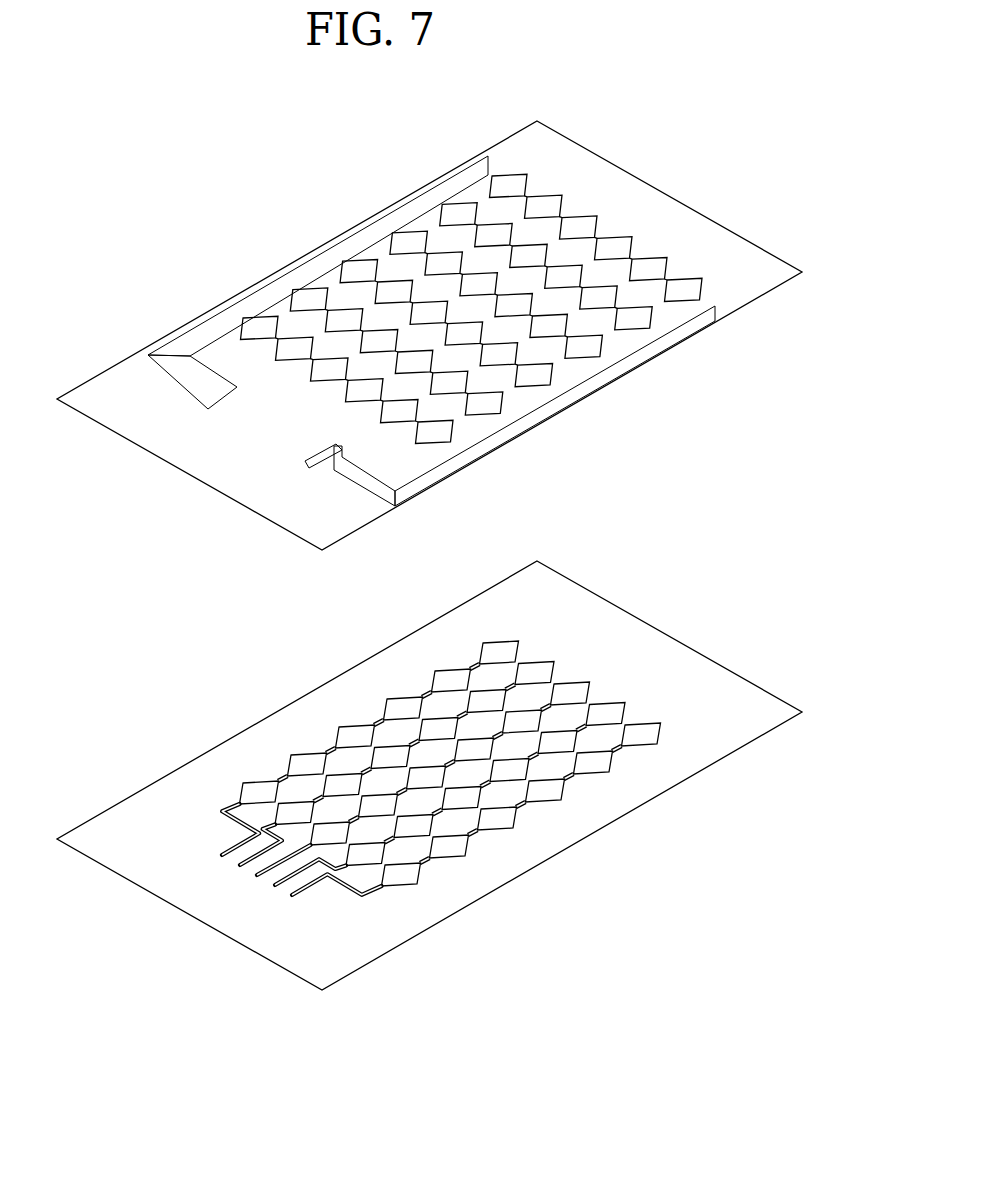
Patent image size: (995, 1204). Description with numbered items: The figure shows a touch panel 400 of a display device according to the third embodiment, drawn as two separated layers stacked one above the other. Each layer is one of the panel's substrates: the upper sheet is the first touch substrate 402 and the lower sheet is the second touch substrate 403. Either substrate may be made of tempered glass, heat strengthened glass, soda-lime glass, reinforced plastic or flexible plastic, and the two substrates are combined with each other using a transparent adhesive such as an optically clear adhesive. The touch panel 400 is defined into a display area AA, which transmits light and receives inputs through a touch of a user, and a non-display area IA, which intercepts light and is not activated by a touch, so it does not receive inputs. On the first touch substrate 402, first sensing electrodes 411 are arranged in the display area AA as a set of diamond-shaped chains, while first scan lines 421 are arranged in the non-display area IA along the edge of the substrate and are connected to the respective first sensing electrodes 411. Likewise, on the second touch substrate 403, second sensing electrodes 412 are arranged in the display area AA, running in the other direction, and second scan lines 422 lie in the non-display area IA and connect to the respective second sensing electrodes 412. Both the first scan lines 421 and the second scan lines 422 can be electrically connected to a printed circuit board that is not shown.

The touch panel 400 is at (199, 176).
The first touch substrate 402 is at (104, 376).
The second touch substrate 403 is at (292, 702).
The first sensing electrodes 411 is at (598, 343).
The second sensing electrodes 412 is at (598, 766).
The first scan lines 421 is at (430, 190).
The second scan lines 422 is at (287, 903).
The non-display area IA is at (742, 285).
The display area AA is at (536, 401).